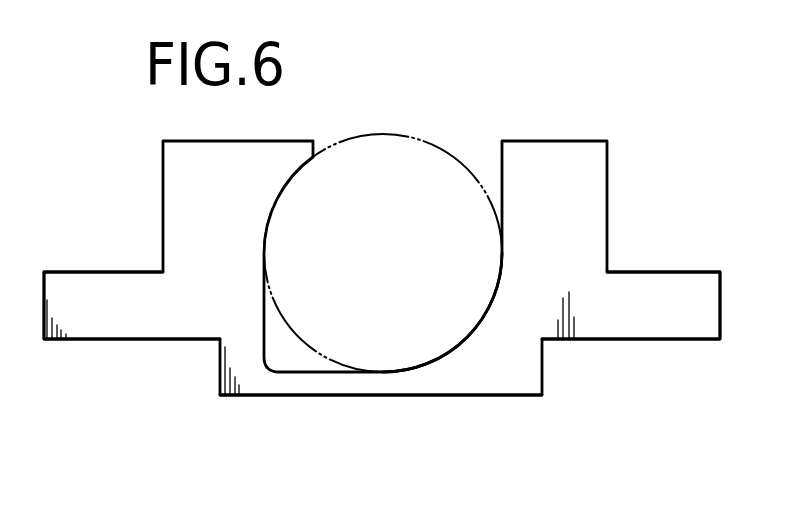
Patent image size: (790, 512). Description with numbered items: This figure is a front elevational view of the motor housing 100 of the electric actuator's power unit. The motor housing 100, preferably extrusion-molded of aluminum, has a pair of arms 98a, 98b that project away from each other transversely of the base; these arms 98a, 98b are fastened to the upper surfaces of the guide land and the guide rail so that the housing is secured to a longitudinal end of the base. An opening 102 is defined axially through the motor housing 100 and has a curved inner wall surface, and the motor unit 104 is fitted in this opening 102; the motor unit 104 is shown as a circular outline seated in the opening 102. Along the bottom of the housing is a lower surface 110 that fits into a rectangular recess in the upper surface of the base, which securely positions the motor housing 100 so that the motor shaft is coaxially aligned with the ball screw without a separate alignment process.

The motor housing 100 is at (546, 135).
The arm 98a is at (678, 292).
The arm 98b is at (97, 288).
The opening 102 is at (470, 322).
The motor unit 104 is at (431, 149).
The lower surface 110 is at (340, 396).